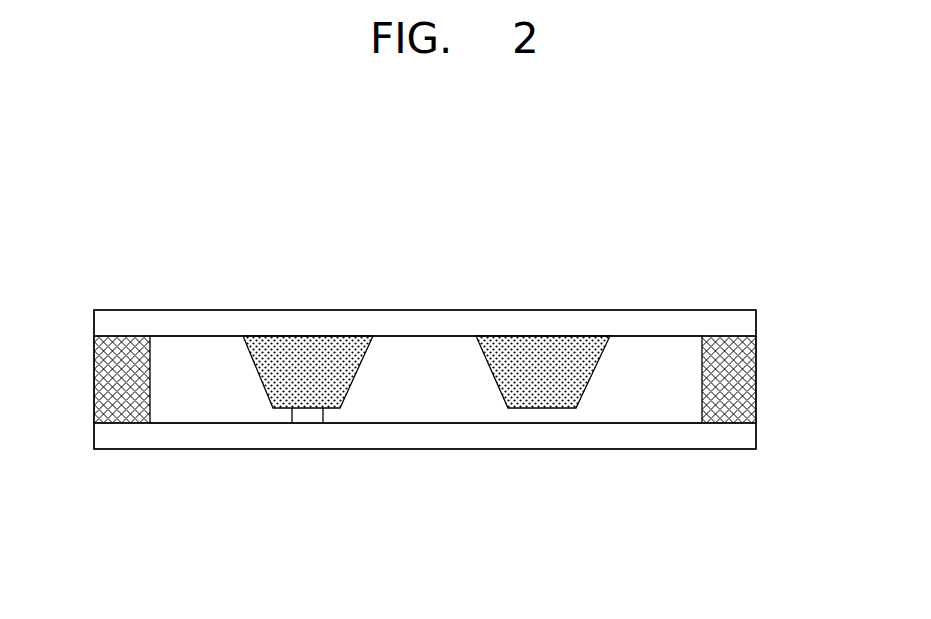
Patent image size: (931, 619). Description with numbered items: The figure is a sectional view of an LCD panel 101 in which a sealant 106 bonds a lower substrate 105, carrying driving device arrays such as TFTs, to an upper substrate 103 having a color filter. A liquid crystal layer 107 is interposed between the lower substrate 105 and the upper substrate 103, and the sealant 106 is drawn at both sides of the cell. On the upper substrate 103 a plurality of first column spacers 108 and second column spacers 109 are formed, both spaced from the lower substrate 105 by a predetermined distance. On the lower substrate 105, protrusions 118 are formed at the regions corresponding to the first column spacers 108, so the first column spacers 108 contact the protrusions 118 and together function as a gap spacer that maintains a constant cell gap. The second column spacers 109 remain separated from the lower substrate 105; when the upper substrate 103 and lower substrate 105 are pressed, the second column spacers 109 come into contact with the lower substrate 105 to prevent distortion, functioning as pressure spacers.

The organic light emitting display device 101 is at (100, 293).
The upper substrate 103 is at (748, 327).
The lower substrate 105 is at (748, 443).
The sealant 106 is at (757, 385).
The liquid crystal layer 107 is at (650, 350).
The first column spacers 108 is at (307, 345).
The second column spacers 109 is at (546, 347).
The protrusions 118 is at (312, 415).